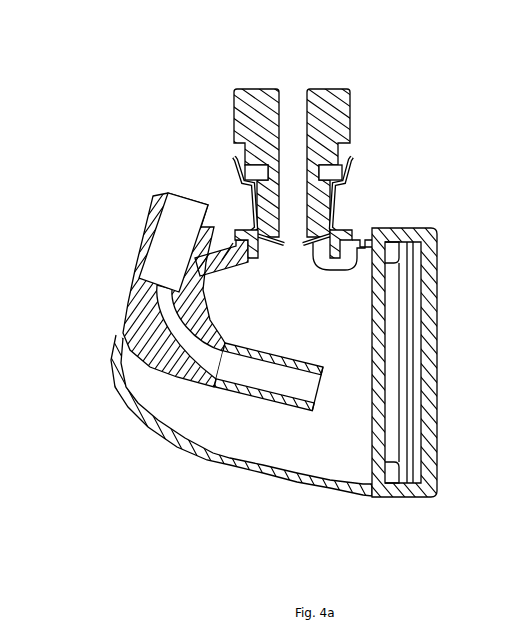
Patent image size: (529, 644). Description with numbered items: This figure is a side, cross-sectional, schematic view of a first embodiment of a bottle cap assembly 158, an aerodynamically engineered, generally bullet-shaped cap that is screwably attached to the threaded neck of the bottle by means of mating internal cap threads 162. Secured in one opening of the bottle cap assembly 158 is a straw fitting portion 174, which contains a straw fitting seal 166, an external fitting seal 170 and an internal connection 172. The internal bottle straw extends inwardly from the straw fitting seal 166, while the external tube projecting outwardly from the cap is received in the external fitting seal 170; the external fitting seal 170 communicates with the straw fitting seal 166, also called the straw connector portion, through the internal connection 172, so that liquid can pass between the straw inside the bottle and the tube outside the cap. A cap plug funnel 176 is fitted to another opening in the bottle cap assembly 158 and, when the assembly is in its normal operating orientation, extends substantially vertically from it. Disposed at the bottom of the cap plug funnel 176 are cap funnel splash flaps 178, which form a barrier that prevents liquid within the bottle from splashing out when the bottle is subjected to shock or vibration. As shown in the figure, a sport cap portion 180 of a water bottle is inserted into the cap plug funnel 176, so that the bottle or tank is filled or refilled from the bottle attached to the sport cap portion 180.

The bottle cap assembly 158 is at (421, 65).
The internal cap threads 162 is at (415, 283).
The straw fitting seal 166 is at (258, 377).
The external fitting seal 170 is at (176, 217).
The internal connection 172 is at (160, 328).
The straw fitting portion 174 is at (141, 258).
The cap plug funnel 176 is at (236, 162).
The cap funnel splash flaps 178 is at (338, 267).
The sport cap portion 180 is at (237, 90).